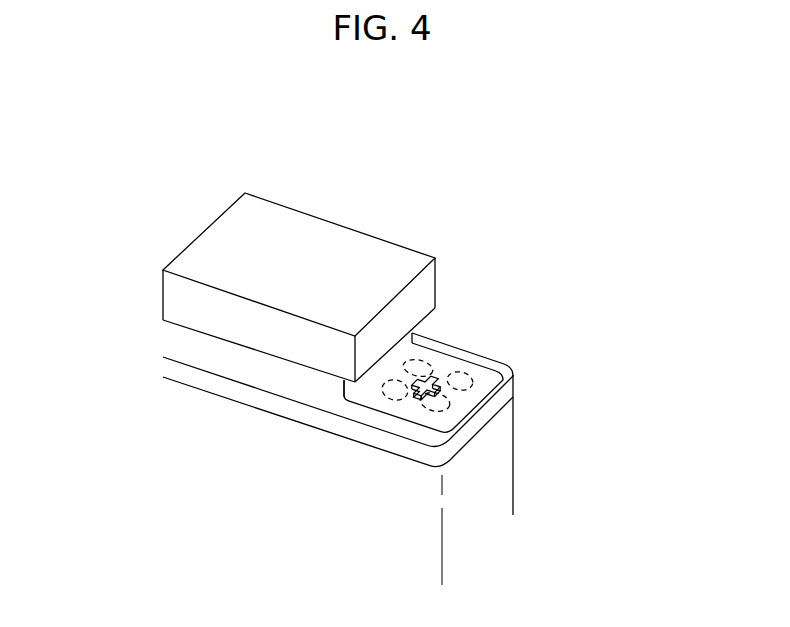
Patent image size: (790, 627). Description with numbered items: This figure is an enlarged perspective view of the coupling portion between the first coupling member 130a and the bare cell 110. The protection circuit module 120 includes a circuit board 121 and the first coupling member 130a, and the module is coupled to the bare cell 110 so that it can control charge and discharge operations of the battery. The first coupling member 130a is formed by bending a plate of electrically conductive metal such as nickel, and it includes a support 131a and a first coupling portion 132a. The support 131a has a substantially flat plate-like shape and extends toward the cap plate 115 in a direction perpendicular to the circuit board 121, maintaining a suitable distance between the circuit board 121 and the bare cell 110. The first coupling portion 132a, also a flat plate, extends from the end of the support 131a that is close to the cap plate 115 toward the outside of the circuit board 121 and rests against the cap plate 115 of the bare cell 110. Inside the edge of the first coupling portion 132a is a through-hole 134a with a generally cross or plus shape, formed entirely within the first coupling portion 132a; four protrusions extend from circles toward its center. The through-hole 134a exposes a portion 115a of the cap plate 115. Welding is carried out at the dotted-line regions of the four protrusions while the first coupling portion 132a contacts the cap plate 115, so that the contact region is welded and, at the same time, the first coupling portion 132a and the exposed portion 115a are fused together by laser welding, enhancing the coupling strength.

The bare cell 110 is at (522, 460).
The cap plate 115 is at (376, 393).
The exposed portion of the cap plate 115a is at (437, 378).
The protection circuit module 120 is at (325, 275).
The circuit board 121 is at (355, 238).
The first coupling member 130a is at (424, 329).
The support 131a is at (342, 386).
The first coupling portion 132a is at (387, 403).
The through-hole 134a is at (428, 400).